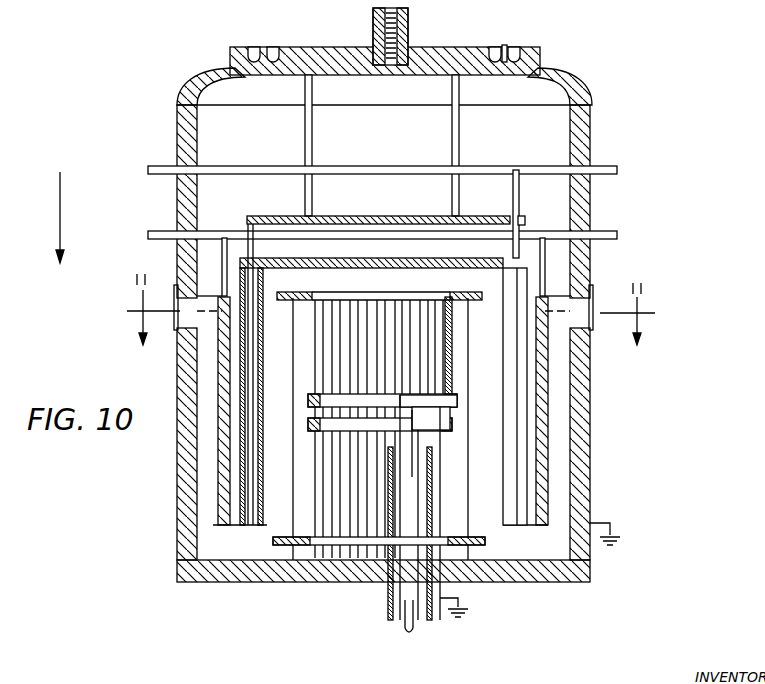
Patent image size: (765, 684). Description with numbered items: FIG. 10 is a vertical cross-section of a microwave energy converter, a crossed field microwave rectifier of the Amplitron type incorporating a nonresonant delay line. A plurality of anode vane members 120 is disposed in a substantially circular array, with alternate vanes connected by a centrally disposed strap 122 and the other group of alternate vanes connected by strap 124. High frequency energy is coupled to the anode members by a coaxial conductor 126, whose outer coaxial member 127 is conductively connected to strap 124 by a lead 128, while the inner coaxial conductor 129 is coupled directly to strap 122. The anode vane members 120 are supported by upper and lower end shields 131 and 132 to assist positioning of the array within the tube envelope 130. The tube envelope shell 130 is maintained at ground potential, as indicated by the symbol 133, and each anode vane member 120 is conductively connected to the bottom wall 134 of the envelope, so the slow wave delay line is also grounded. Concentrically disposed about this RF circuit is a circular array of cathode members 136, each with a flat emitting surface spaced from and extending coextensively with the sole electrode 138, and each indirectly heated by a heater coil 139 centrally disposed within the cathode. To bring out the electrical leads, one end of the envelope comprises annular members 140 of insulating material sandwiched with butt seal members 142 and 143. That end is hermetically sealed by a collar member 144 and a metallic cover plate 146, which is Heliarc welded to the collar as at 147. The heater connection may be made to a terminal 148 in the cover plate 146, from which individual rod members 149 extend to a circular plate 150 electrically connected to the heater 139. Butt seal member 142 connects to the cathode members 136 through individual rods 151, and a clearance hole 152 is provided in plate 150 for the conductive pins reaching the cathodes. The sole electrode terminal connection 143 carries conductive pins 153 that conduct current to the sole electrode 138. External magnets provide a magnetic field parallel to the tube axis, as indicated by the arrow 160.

The anode vane members 120 is at (482, 358).
The strap 122 is at (456, 402).
The strap 124 is at (452, 425).
The coaxial conductor 126 is at (384, 629).
The outer coaxial member 127 is at (388, 598).
The lead 128 is at (440, 446).
The inner coaxial conductor 129 is at (407, 632).
The tube envelope 130 is at (584, 420).
The upper end shield 131 is at (470, 294).
The lower end shield 132 is at (487, 541).
The ground symbol 133 is at (622, 547).
The bottom wall 134 is at (520, 580).
The cathode members 136 is at (505, 325).
The sole electrode 138 is at (220, 332).
The heater coil 139 is at (247, 528).
The annular members 140 is at (178, 143).
The butt seal member 142 is at (162, 175).
The butt seal member 143 is at (149, 234).
The collar member 144 is at (586, 80).
The cover plate 146 is at (470, 56).
The weld 147 is at (505, 47).
The terminal 148 is at (412, 20).
The rod members 149 is at (313, 132).
The circular plate 150 is at (356, 216).
The rods 151 is at (520, 197).
The clearance hole 152 is at (517, 216).
The conductive pins 153 is at (222, 256).
The arrow 160 is at (62, 190).